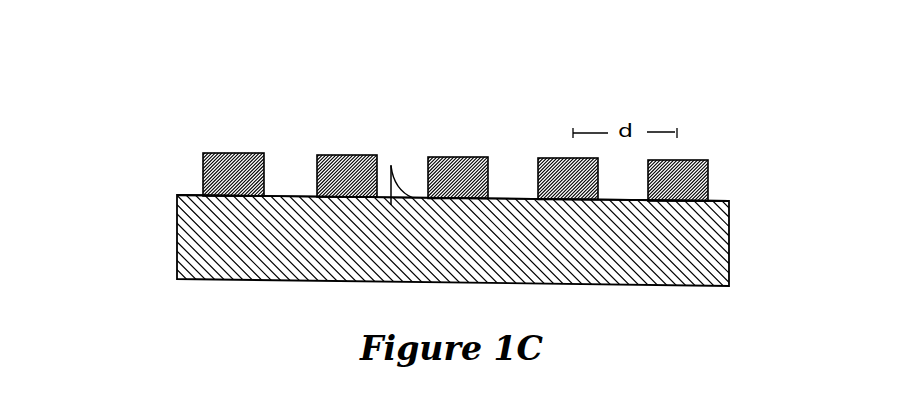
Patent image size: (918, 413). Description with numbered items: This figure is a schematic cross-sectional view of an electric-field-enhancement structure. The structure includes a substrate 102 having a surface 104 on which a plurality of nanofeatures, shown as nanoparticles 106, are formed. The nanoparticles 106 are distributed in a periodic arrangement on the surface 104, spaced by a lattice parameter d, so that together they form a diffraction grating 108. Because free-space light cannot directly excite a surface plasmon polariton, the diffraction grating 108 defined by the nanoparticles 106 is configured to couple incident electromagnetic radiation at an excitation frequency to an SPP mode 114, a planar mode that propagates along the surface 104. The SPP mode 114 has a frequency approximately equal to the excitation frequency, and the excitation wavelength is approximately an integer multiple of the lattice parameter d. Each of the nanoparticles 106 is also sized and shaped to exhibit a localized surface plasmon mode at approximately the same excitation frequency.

The substrate 102 is at (717, 250).
The surface 104 is at (720, 201).
The nanoparticles 106 is at (180, 156).
The diffraction grating 108 is at (398, 137).
The SPP mode 114 is at (393, 188).